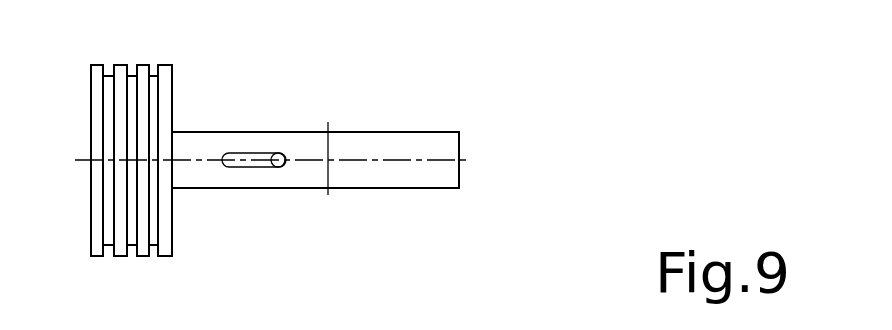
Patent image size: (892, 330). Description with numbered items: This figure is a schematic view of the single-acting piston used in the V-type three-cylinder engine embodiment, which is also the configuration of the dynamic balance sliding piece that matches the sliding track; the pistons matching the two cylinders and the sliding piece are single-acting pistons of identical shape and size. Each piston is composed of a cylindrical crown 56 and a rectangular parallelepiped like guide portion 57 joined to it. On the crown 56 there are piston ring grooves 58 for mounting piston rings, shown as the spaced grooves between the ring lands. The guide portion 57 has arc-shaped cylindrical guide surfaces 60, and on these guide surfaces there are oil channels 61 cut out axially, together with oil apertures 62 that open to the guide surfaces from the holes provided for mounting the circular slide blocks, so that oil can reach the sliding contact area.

The cylindrical crown 56 is at (93, 103).
The guide portion 57 is at (390, 173).
The piston ring groove 58 is at (131, 253).
The arc-shaped cylindrical guide surface 60 is at (197, 170).
The oil channel 61 is at (247, 170).
The oil aperture 62 is at (282, 165).